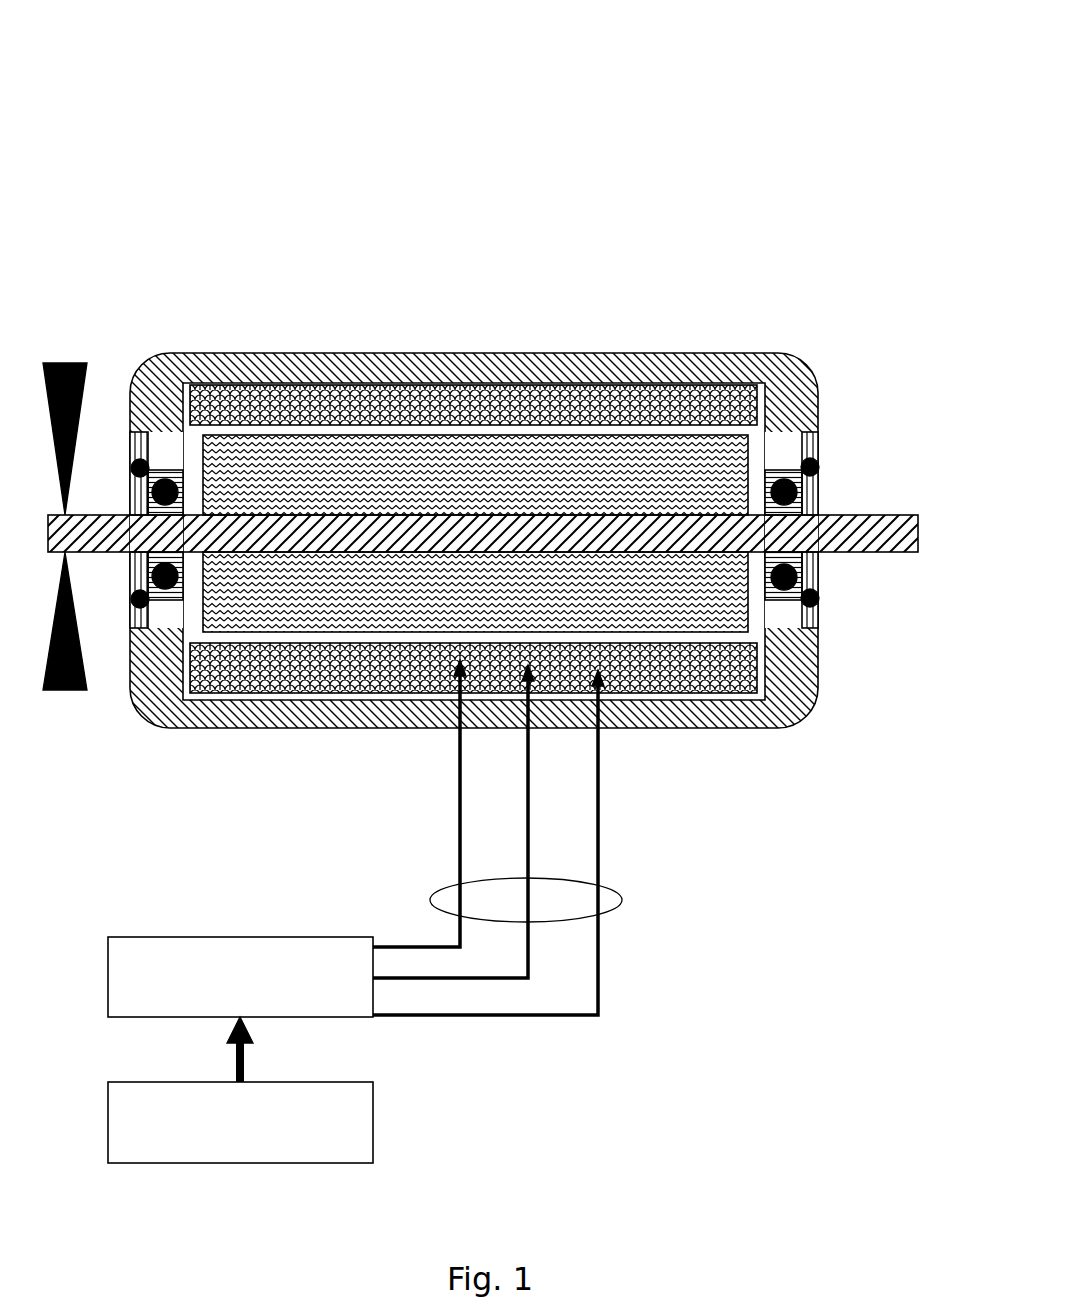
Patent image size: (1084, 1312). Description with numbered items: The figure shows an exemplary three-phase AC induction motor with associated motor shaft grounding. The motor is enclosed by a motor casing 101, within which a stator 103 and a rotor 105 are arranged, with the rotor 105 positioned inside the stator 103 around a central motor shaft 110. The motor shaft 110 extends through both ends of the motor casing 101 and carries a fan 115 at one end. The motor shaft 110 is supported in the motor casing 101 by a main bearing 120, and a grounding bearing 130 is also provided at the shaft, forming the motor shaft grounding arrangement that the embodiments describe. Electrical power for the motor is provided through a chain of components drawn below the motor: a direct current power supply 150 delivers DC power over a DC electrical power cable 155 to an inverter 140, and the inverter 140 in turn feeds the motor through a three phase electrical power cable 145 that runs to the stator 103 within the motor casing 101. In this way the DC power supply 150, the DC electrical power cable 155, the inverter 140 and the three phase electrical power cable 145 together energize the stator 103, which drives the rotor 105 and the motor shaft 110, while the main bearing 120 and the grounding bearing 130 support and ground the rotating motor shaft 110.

The motor casing 101 is at (164, 334).
The stator 103 is at (642, 392).
The rotor 105 is at (700, 468).
The motor shaft 110 is at (868, 558).
The fan 115 is at (78, 345).
The main bearing 120 is at (164, 612).
The grounding bearing 130 is at (136, 647).
The inverter 140 is at (212, 999).
The three phase electrical power cable 145 is at (622, 900).
The direct current (DC) power supply 150 is at (212, 1144).
The DC electrical power cable 155 is at (278, 1060).